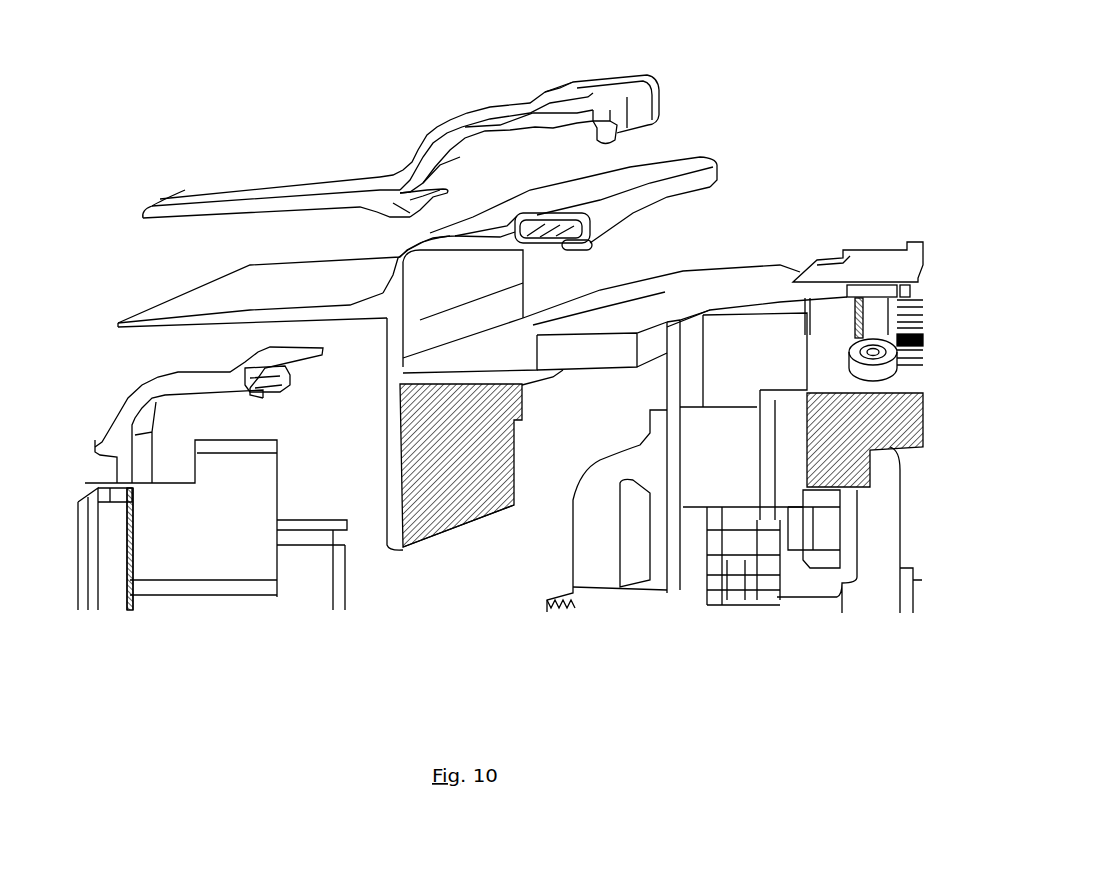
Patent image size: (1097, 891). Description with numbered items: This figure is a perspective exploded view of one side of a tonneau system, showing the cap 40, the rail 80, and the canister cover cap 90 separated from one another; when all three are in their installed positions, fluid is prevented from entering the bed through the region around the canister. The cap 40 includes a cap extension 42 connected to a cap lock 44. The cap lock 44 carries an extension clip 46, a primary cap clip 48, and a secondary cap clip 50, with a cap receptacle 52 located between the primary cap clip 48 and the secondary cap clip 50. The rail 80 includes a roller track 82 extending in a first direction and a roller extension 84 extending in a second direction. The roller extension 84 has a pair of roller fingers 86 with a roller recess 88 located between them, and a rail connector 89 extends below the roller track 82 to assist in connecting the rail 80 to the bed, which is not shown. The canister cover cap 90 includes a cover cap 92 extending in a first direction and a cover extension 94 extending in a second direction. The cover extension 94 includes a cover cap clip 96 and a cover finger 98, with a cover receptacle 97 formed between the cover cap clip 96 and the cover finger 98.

The cap 40 is at (169, 120).
The cap extension 42 is at (267, 196).
The cap lock 44 is at (424, 113).
The extension clip 46 is at (405, 213).
The primary cap clip 48 is at (605, 142).
The secondary cap clip 50 is at (600, 113).
The cap receptacle 52 is at (587, 138).
The rail 80 is at (730, 154).
The roller track 82 is at (517, 317).
The roller extension 84 is at (200, 316).
The roller fingers 86 is at (533, 247).
The roller recess 88 is at (534, 267).
The rail connector 89 is at (487, 531).
The canister cover cap 90 is at (107, 593).
The cover cap 92 is at (89, 371).
The cover extension 94 is at (97, 448).
The cover cap clip 96 is at (293, 362).
The tab surface 97 is at (285, 405).
The cover finger 98 is at (262, 388).